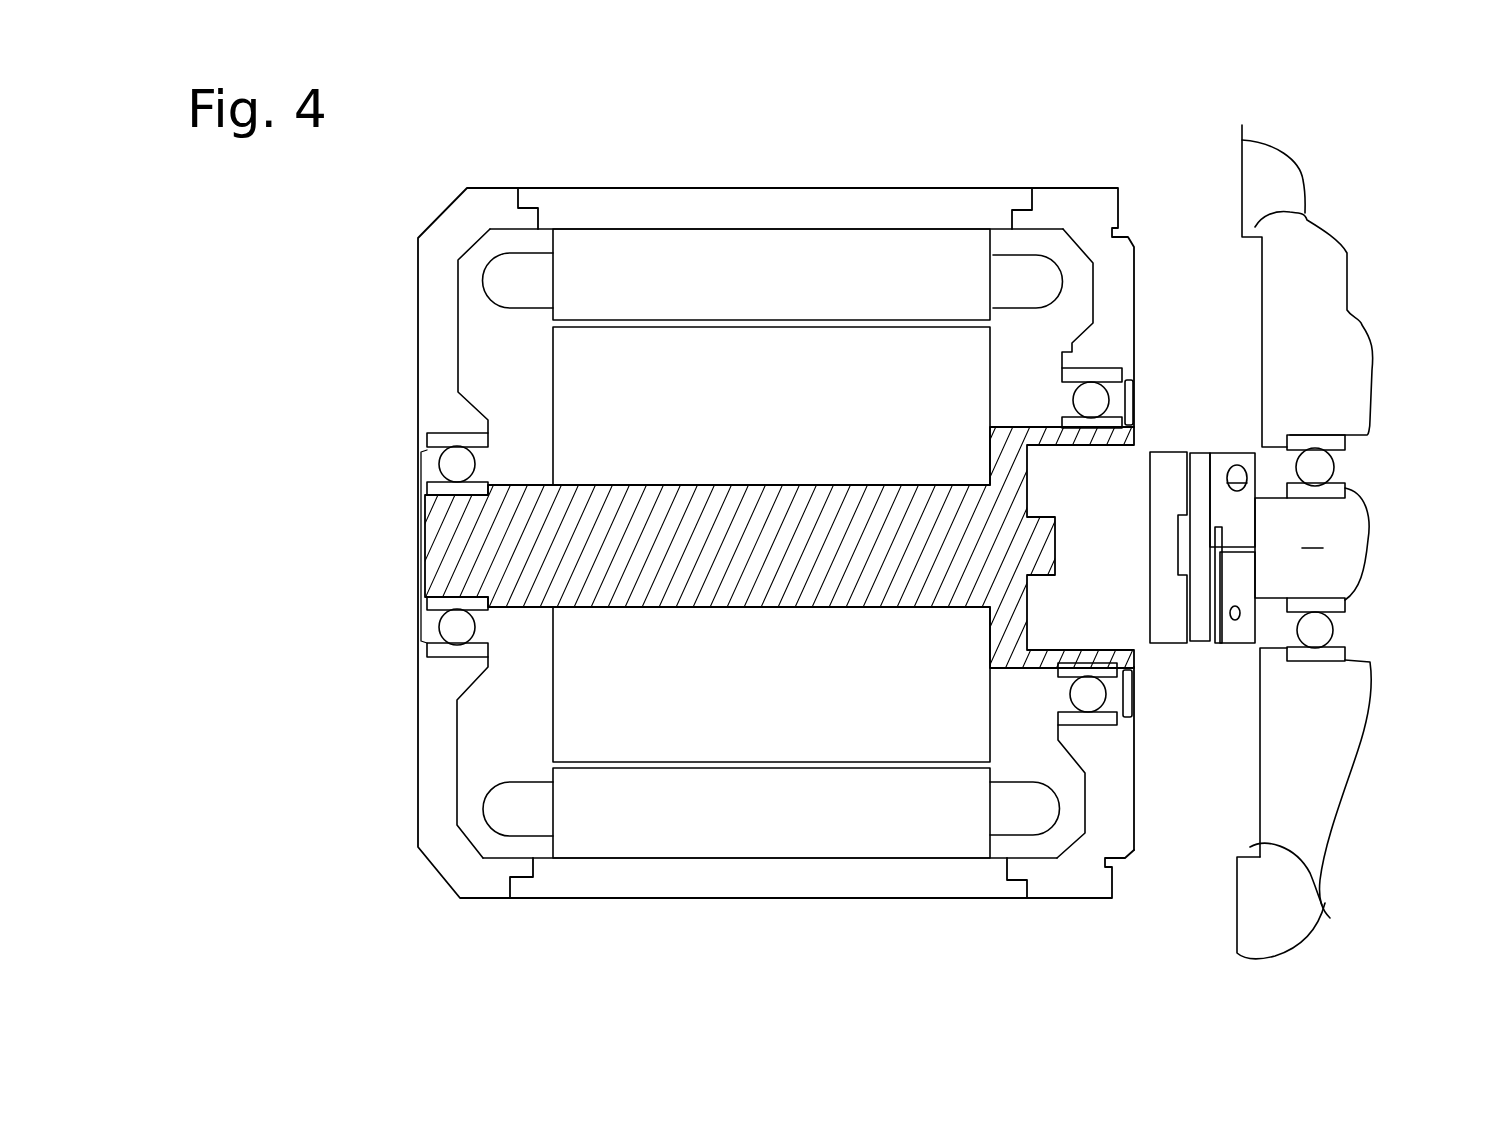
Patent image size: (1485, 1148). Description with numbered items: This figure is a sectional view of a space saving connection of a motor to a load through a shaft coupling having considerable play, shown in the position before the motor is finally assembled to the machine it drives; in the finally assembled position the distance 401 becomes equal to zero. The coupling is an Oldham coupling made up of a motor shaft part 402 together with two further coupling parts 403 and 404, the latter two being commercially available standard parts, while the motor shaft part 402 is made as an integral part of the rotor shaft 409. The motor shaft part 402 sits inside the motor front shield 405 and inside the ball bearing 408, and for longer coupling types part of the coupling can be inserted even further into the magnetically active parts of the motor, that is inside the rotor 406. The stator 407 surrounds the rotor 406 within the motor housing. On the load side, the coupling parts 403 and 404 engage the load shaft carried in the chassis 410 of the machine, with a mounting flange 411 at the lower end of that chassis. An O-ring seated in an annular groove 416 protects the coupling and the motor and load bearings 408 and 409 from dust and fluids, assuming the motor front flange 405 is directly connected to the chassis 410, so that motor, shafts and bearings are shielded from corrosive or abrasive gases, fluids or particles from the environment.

The distance 401 is at (1242, 141).
The motor shaft part 402 is at (1043, 547).
The coupling part 403 is at (1182, 608).
The coupling part 404 is at (1225, 513).
The motor front shield 405 is at (1083, 227).
The rotor 406 is at (580, 397).
The stator 407 is at (915, 267).
The ball bearing 408 is at (1090, 690).
The rotor shaft 409 is at (650, 570).
The chassis 410 is at (1307, 217).
The mounting flange 411 is at (1327, 913).
The annular groove 416 is at (1120, 228).